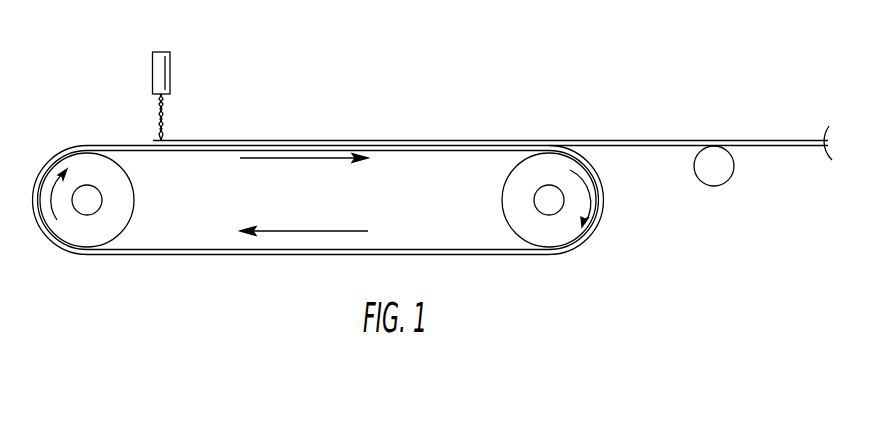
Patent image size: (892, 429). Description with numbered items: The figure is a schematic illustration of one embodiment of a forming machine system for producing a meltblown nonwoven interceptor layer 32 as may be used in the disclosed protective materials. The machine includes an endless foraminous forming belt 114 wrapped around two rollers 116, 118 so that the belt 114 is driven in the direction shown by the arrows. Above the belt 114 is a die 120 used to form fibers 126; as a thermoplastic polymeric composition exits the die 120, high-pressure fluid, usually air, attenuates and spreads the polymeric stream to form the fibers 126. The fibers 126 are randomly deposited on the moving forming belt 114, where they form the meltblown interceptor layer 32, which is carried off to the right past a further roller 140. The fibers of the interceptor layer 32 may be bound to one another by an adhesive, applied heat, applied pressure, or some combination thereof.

The meltblown interceptor layer 32 is at (203, 139).
The endless foraminous forming belt 114 is at (163, 256).
The roller 116 is at (135, 191).
The roller 118 is at (502, 183).
The die 120 is at (152, 61).
The fibers 126 is at (163, 117).
The roller 140 is at (719, 186).